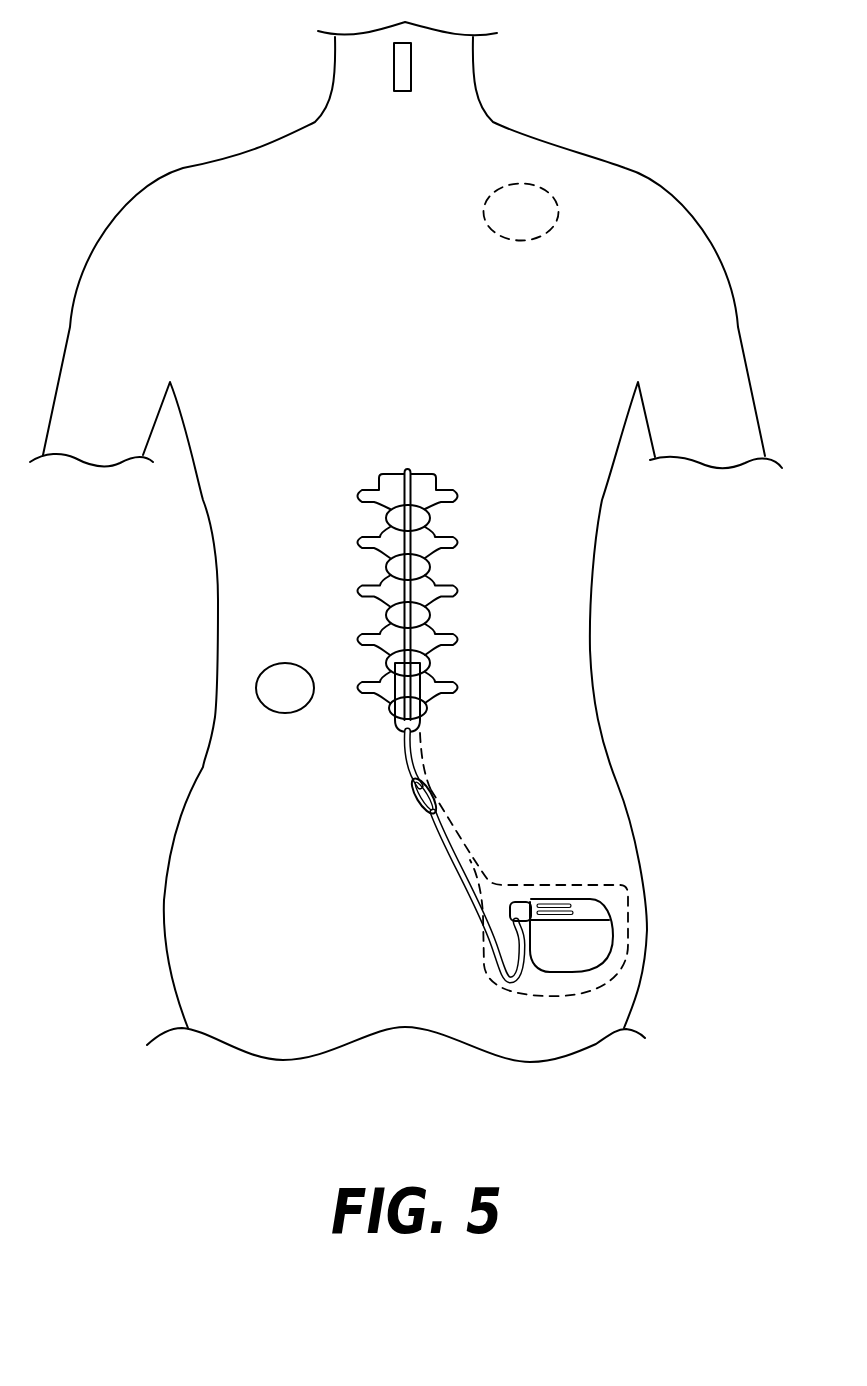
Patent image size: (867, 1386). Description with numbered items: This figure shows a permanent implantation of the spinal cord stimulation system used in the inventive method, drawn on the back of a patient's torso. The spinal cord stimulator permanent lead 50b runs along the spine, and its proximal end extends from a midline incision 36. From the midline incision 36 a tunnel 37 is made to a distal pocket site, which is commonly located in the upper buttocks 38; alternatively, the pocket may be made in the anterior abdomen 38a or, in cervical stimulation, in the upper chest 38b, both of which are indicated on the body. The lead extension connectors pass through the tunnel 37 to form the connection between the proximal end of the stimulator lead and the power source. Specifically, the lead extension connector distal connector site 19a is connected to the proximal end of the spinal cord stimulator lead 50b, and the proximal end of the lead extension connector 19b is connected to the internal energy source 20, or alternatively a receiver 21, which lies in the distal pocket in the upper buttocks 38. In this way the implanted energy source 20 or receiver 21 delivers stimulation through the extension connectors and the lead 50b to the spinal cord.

The lead extension connector distal connector site 19a is at (434, 792).
The proximal end of the lead extension connector 19b is at (522, 901).
The internal energy source 20 is at (662, 935).
The receiver 21 is at (591, 949).
The midline incision 36 is at (437, 691).
The tunnel 37 is at (487, 828).
The upper buttocks 38 is at (662, 901).
The anterior abdomen 38a is at (217, 702).
The upper chest 38b is at (413, 67).
The spinal cord stimulator permanent lead 50b is at (428, 782).